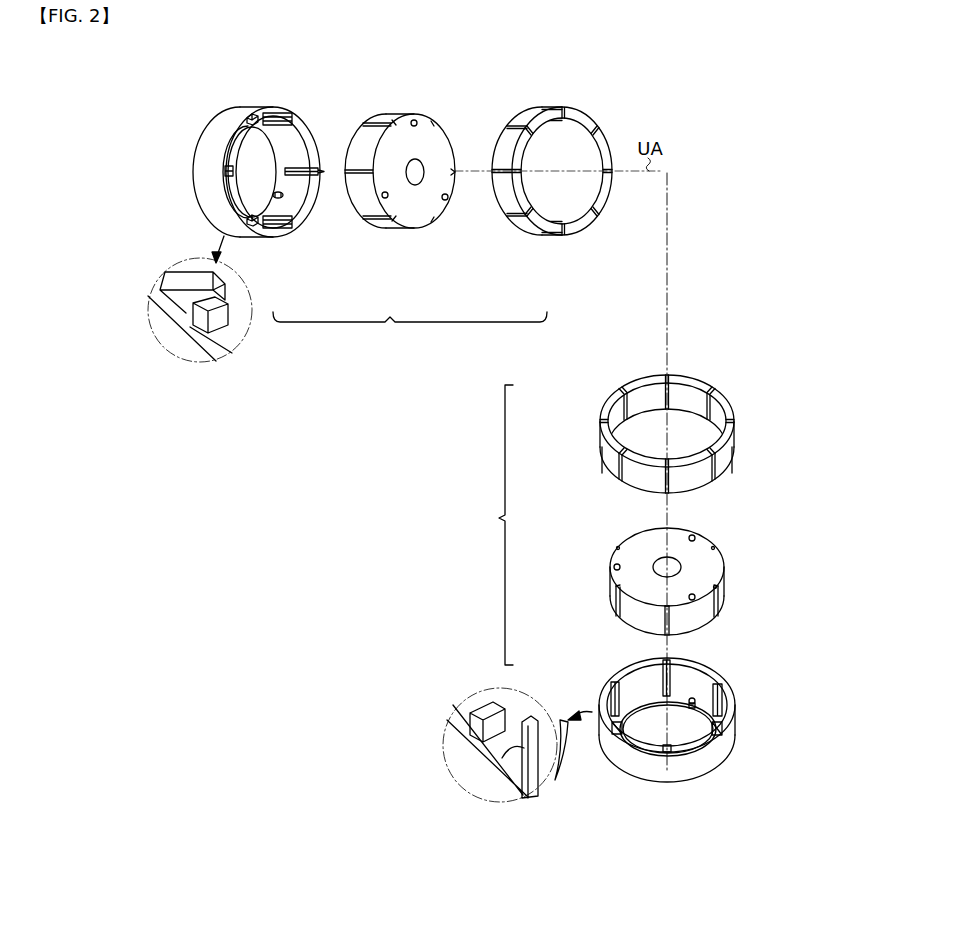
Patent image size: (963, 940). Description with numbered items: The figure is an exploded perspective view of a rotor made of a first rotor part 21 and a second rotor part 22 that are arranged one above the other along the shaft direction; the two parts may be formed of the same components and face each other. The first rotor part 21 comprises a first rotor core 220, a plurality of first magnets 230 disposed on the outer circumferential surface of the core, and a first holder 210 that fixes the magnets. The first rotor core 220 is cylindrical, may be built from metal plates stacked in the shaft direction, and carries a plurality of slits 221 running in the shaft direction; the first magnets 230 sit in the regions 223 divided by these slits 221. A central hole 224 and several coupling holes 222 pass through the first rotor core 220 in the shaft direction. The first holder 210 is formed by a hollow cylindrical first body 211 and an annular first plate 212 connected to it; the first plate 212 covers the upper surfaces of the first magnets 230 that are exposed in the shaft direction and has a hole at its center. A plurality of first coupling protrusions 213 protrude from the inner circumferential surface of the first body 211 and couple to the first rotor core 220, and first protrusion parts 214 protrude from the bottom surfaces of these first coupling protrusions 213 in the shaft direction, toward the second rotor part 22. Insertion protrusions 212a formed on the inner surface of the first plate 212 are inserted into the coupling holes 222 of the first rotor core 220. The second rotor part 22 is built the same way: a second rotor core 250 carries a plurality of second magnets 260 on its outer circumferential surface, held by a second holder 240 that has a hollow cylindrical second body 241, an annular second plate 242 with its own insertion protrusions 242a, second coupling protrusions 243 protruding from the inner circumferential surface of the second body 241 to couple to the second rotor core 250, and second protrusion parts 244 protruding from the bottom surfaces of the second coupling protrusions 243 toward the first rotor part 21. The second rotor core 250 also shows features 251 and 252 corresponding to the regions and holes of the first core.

The first rotor part 21 is at (410, 332).
The second rotor part 22 is at (493, 525).
The first holder 210 is at (213, 211).
The first body 211 is at (205, 178).
The first plate 212 is at (262, 127).
The insertion protrusion 212a is at (275, 197).
The first coupling protrusion 213 is at (277, 112).
The first protrusion part 214 is at (256, 113).
The first rotor core 220 is at (419, 191).
The slit 221 is at (394, 121).
The coupling hole 222 is at (446, 200).
The region 223 is at (368, 140).
The central hole 224 is at (420, 165).
The first magnet 230 is at (540, 250).
The second holder 240 is at (595, 718).
The second body 241 is at (713, 748).
The second plate 242 is at (673, 692).
The insertion protrusion 242a is at (694, 702).
The second coupling protrusion 243 is at (724, 702).
The second protrusion part 244 is at (730, 720).
The second rotor core 250 is at (654, 564).
The rib 251 is at (722, 548).
The hole 252 is at (695, 535).
The second magnet 260 is at (602, 405).